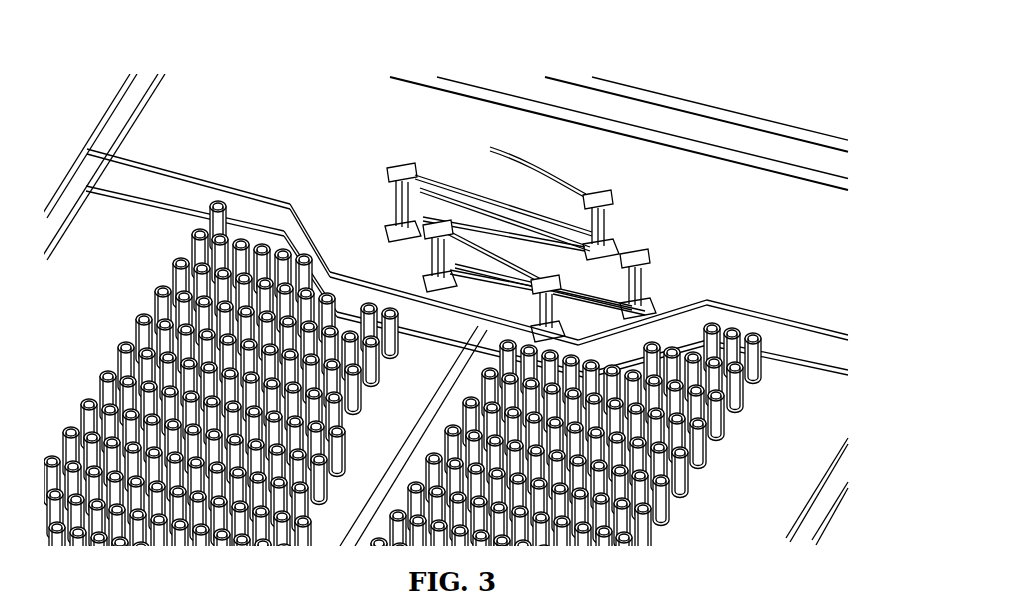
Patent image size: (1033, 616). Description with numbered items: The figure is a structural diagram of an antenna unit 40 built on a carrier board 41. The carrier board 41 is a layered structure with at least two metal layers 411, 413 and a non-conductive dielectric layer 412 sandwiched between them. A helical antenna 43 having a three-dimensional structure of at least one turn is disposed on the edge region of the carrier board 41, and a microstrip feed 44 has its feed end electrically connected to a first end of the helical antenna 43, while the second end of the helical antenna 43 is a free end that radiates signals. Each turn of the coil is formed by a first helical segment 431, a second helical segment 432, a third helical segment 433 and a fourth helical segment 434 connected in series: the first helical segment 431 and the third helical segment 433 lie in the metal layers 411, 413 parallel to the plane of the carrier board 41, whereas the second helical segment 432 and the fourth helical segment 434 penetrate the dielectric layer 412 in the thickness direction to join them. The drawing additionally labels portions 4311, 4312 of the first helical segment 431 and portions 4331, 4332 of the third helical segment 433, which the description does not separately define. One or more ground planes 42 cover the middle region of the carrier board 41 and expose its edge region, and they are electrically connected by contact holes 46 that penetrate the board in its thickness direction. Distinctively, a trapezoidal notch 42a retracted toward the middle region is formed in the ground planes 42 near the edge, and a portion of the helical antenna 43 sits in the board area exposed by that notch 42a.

The antenna unit 40 is at (441, 34).
The carrier board 41 is at (619, 133).
The metal layer 411 is at (696, 108).
The non-conductive dielectric layer 412 is at (722, 122).
The metal layer 413 is at (757, 157).
The ground plane 42 is at (444, 309).
The notch 42a is at (318, 228).
The helical antenna 43 is at (525, 244).
The first helical segment 431 is at (637, 212).
The first connecting portion of first connecting member 4311 is at (588, 195).
The second connecting portion of first connecting member 4312 is at (606, 196).
The second helical segment 432 is at (590, 222).
The third helical segment 433 is at (486, 255).
The first connecting portion of second connecting member 4331 is at (405, 249).
The second connecting portion 4332 is at (425, 232).
The fourth helical segment 434 is at (395, 198).
The microstrip feed 44 is at (432, 418).
The contact holes 46 is at (168, 310).